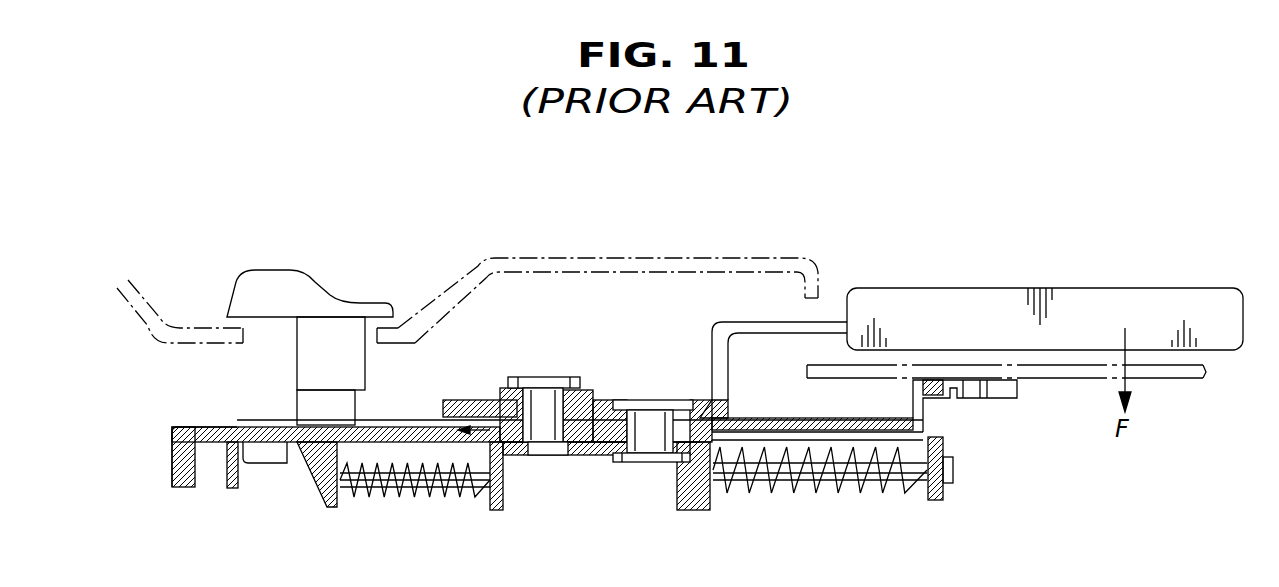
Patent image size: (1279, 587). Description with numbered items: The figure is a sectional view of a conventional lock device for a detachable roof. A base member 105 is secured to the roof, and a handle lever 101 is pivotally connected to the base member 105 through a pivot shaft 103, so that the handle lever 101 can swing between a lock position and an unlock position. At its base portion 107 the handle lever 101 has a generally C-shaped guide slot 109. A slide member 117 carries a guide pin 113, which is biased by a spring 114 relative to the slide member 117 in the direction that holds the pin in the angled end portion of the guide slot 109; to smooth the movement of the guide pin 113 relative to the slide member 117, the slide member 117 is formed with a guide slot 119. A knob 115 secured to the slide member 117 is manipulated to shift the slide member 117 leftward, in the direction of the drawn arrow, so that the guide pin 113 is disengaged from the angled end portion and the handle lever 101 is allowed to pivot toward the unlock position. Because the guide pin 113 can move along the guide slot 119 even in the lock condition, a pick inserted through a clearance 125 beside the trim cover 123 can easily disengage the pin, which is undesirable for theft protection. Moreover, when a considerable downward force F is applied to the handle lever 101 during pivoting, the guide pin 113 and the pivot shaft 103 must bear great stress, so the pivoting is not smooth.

The handle lever 101 is at (1088, 288).
The pivot shaft 103 is at (650, 447).
The base member 105 is at (783, 418).
The base portion 107 is at (453, 396).
The guide slot 109 is at (483, 395).
The guide pin 113 is at (553, 400).
The spring 114 is at (393, 488).
The knob 115 is at (307, 270).
The slide member 117 is at (287, 437).
The guide slot 119 is at (420, 430).
The trim cover 123 is at (695, 258).
The clearance 125 is at (825, 305).